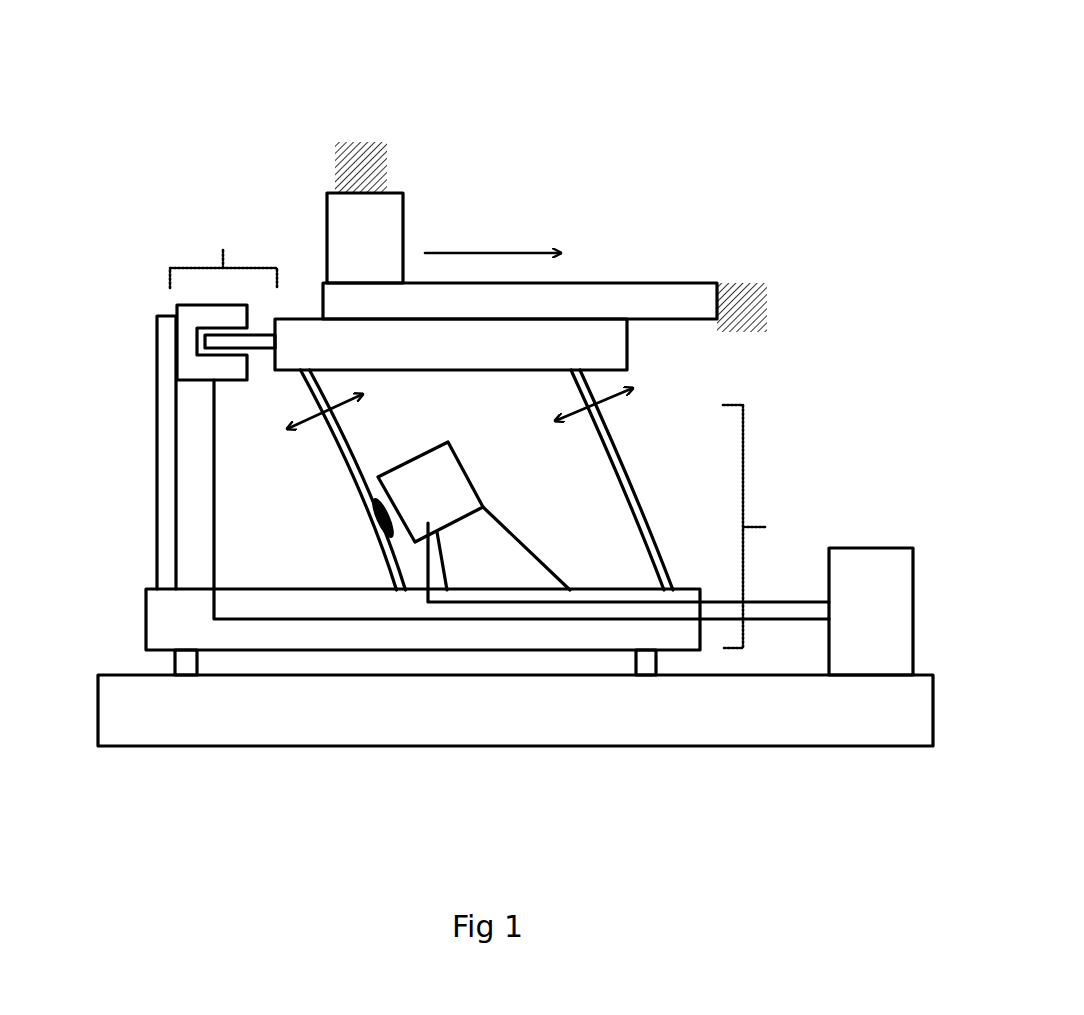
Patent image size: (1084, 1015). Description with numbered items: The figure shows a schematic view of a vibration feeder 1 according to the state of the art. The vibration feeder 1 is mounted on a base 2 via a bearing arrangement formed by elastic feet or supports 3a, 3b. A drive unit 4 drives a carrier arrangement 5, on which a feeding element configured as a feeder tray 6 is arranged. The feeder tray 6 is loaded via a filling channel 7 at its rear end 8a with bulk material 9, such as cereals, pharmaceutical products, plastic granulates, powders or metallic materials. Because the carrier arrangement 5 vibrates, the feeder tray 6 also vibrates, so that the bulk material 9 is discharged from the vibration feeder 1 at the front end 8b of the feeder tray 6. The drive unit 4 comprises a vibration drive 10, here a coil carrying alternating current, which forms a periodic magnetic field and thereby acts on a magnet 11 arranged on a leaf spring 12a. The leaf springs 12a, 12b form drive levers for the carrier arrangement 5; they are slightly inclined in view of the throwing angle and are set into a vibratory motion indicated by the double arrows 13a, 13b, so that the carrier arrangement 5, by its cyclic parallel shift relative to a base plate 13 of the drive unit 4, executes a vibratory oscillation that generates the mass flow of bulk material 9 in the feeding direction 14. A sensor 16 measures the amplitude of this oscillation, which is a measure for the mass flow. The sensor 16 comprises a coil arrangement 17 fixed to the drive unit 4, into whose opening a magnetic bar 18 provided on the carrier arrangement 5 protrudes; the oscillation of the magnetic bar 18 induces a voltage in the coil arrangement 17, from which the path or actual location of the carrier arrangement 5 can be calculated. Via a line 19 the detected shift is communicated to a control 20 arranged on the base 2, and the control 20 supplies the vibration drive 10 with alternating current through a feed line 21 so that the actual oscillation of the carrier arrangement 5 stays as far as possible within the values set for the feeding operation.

The vibration feeder 1 is at (582, 143).
The base 2 is at (856, 735).
The elastic foot 3a is at (186, 664).
The elastic foot 3b is at (643, 667).
The drive unit 4 is at (766, 526).
The carrier arrangement 5 is at (457, 357).
The feeder tray 6 is at (602, 297).
The filling channel 7 is at (340, 242).
The rear end 8a is at (320, 300).
The front end 8b is at (707, 298).
The bulk material 9 is at (360, 148).
The vibration drive 10 is at (412, 505).
The magnet 11 is at (378, 525).
The leaf spring 12a is at (358, 490).
The leaf spring 12b is at (620, 478).
The base plate 13 is at (162, 634).
The double arrow 13a is at (318, 413).
The double arrow 13b is at (617, 393).
The feeding direction 14 is at (493, 248).
The sensor 16 is at (223, 244).
The coil arrangement 17 is at (190, 359).
The magnetic bar 18 is at (225, 338).
The line 19 is at (212, 550).
The control 20 is at (852, 629).
The feed line 21 is at (577, 607).